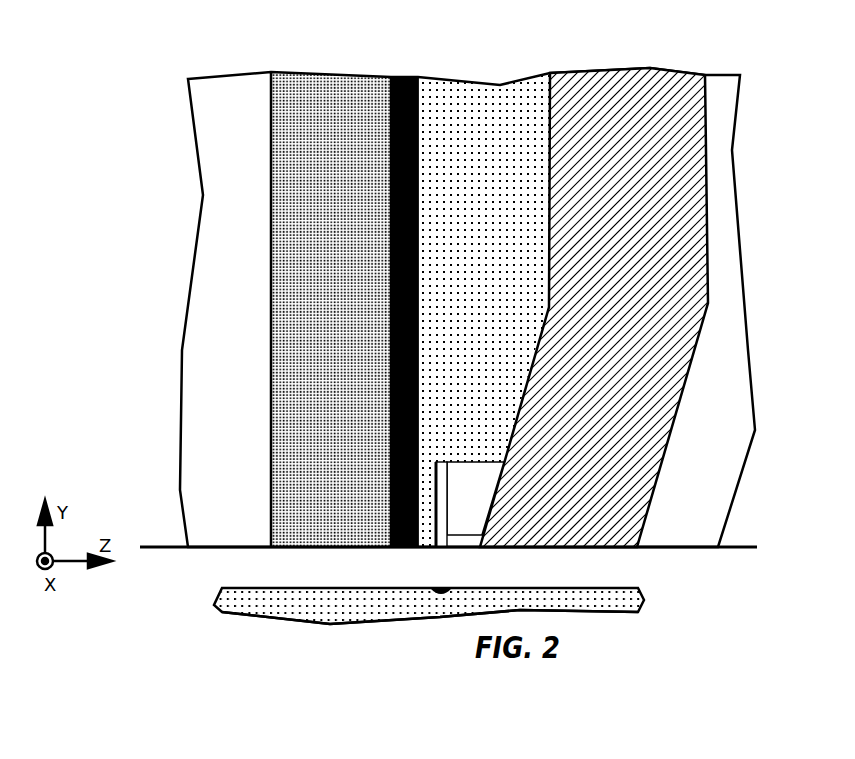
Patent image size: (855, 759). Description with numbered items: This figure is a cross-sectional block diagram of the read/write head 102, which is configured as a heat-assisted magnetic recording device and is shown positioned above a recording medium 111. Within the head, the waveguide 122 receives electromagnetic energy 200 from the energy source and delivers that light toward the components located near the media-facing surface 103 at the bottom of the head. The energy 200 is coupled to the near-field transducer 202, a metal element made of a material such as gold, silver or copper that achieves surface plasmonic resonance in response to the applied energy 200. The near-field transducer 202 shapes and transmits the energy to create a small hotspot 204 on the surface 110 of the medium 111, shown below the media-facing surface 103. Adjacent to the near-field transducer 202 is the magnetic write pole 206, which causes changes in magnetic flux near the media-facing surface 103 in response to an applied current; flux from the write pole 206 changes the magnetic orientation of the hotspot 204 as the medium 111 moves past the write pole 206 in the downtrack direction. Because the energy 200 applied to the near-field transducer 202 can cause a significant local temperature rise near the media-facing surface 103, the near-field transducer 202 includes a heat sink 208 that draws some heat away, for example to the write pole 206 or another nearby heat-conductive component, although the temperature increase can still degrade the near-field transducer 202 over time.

The read/write head 102 is at (166, 45).
The waveguide 122 is at (410, 276).
The electromagnetic energy 200 is at (442, 199).
The magnetic write pole 206 is at (646, 68).
The near-field transducer 202 is at (453, 587).
The heat sink 208 is at (460, 527).
The media-facing surface 103 is at (740, 548).
The surface of medium 110 is at (452, 603).
The recording medium 111 is at (620, 597).
The hotspot 204 is at (440, 593).